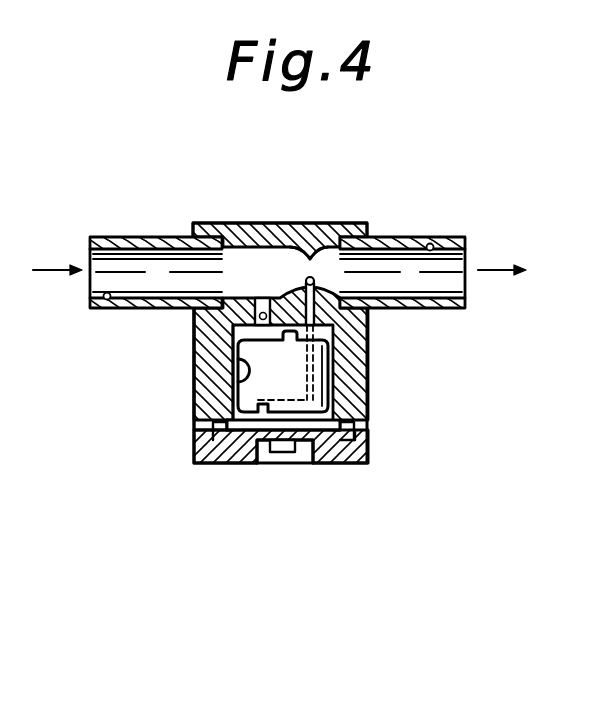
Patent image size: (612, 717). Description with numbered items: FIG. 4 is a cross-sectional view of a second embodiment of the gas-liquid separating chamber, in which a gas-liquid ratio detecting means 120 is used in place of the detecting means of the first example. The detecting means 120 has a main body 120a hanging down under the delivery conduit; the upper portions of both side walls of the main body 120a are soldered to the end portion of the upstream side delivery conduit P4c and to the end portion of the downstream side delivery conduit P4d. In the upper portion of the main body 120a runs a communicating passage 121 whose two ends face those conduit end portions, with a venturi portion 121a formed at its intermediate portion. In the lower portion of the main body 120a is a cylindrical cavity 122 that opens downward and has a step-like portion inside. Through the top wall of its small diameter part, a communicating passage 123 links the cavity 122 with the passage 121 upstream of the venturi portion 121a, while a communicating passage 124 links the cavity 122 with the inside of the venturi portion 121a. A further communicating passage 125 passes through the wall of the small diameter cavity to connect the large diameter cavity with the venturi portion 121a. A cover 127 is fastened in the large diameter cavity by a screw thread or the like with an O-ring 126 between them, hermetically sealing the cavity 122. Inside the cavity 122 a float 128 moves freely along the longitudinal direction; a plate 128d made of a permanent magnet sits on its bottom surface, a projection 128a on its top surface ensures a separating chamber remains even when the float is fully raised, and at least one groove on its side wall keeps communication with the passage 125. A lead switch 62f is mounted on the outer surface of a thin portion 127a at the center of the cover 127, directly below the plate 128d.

The gas-liquid ratio detecting means 120 is at (358, 213).
The communicating passage 121 is at (243, 246).
The venturi portion 121a is at (310, 255).
The downstream side delivery conduit P4d is at (432, 250).
The upstream side delivery conduit P4c is at (107, 300).
The communicating passage 123 is at (232, 322).
The communicating passage 124 is at (368, 320).
The main body 120a is at (370, 355).
The float 128 is at (345, 398).
The projection 128a is at (238, 370).
The cylindrical cavity 122 is at (197, 420).
The communicating passage 125 is at (375, 420).
The O-ring 126 is at (370, 430).
The cover 127 is at (213, 465).
The thin portion 127a is at (297, 467).
The lead switch 62f is at (283, 466).
The plate 128d is at (346, 468).